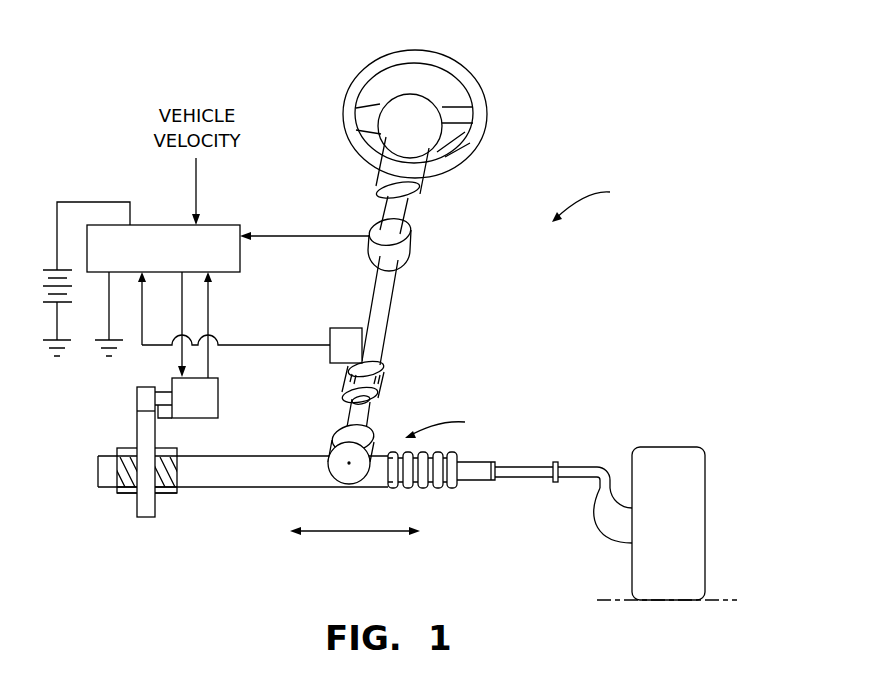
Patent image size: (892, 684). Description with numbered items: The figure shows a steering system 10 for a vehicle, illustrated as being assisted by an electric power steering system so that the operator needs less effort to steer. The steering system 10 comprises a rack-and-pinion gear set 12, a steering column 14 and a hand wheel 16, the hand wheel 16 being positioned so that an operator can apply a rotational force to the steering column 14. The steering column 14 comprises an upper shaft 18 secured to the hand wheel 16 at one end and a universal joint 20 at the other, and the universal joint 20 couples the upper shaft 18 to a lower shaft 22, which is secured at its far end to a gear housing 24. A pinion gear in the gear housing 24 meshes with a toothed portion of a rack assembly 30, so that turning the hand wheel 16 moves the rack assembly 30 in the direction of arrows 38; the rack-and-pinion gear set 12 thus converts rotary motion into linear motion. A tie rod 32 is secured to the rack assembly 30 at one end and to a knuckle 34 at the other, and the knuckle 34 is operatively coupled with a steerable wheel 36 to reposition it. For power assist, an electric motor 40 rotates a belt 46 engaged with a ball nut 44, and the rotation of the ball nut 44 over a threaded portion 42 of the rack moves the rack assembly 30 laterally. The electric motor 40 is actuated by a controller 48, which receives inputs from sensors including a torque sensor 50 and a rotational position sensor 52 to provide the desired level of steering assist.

The steering system 10 is at (593, 201).
The rack-and-pinion gear set 12 is at (449, 424).
The steering column 14 is at (427, 181).
The hand wheel 16 is at (455, 75).
The upper shaft 18 is at (403, 211).
The universal joint 20 is at (375, 370).
The lower shaft 22 is at (362, 422).
The gear housing 24 is at (340, 448).
The rack assembly 30 is at (265, 498).
The tie rod 32 is at (522, 475).
The knuckle 34 is at (607, 520).
The steerable wheel 36 is at (683, 452).
The arrows 38 is at (342, 532).
The electric motor 40 is at (205, 419).
The threaded portion 42 is at (120, 468).
The ball nut 44 is at (127, 492).
The belt 46 is at (137, 418).
The controller 48 is at (175, 225).
The torque sensor 50 is at (410, 238).
The rotational position sensor 52 is at (327, 353).